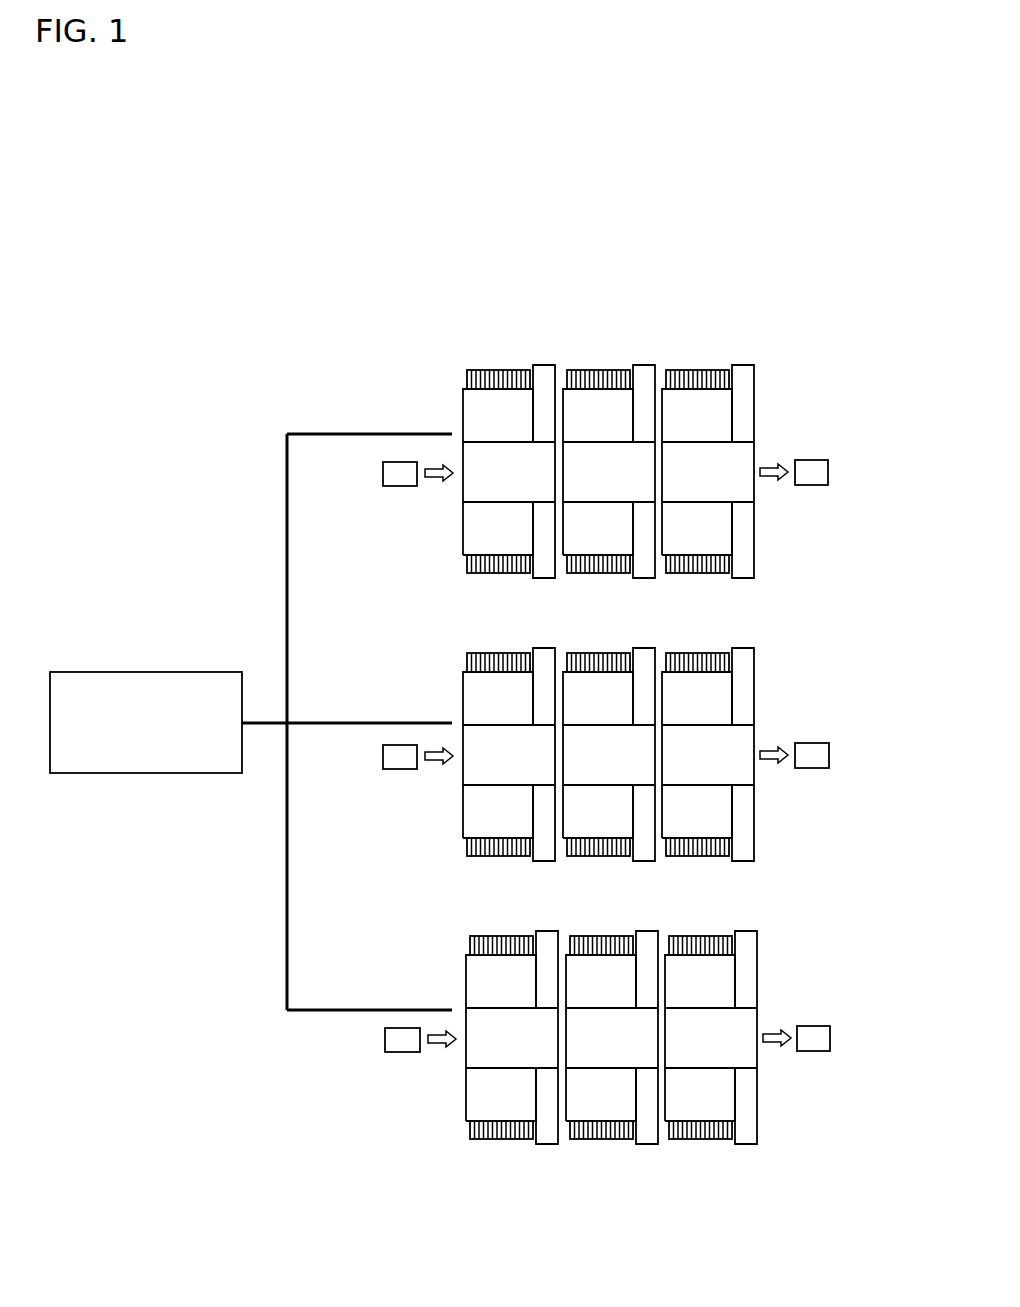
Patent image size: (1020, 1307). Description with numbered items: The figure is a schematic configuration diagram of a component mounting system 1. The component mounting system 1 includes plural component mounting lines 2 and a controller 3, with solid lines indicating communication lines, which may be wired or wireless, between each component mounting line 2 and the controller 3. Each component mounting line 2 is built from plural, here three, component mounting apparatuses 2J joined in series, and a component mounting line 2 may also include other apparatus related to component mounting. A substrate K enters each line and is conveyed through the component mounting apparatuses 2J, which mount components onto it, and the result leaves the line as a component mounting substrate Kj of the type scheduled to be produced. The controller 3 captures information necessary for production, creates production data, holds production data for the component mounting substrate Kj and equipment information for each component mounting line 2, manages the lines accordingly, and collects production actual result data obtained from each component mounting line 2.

The component mounting system 1 is at (465, 185).
The component mounting line 2 is at (450, 351).
The component mounting apparatus 2J is at (511, 366).
The controller 3 is at (148, 682).
The substrate K is at (402, 477).
The component mounting substrate Kj is at (808, 465).